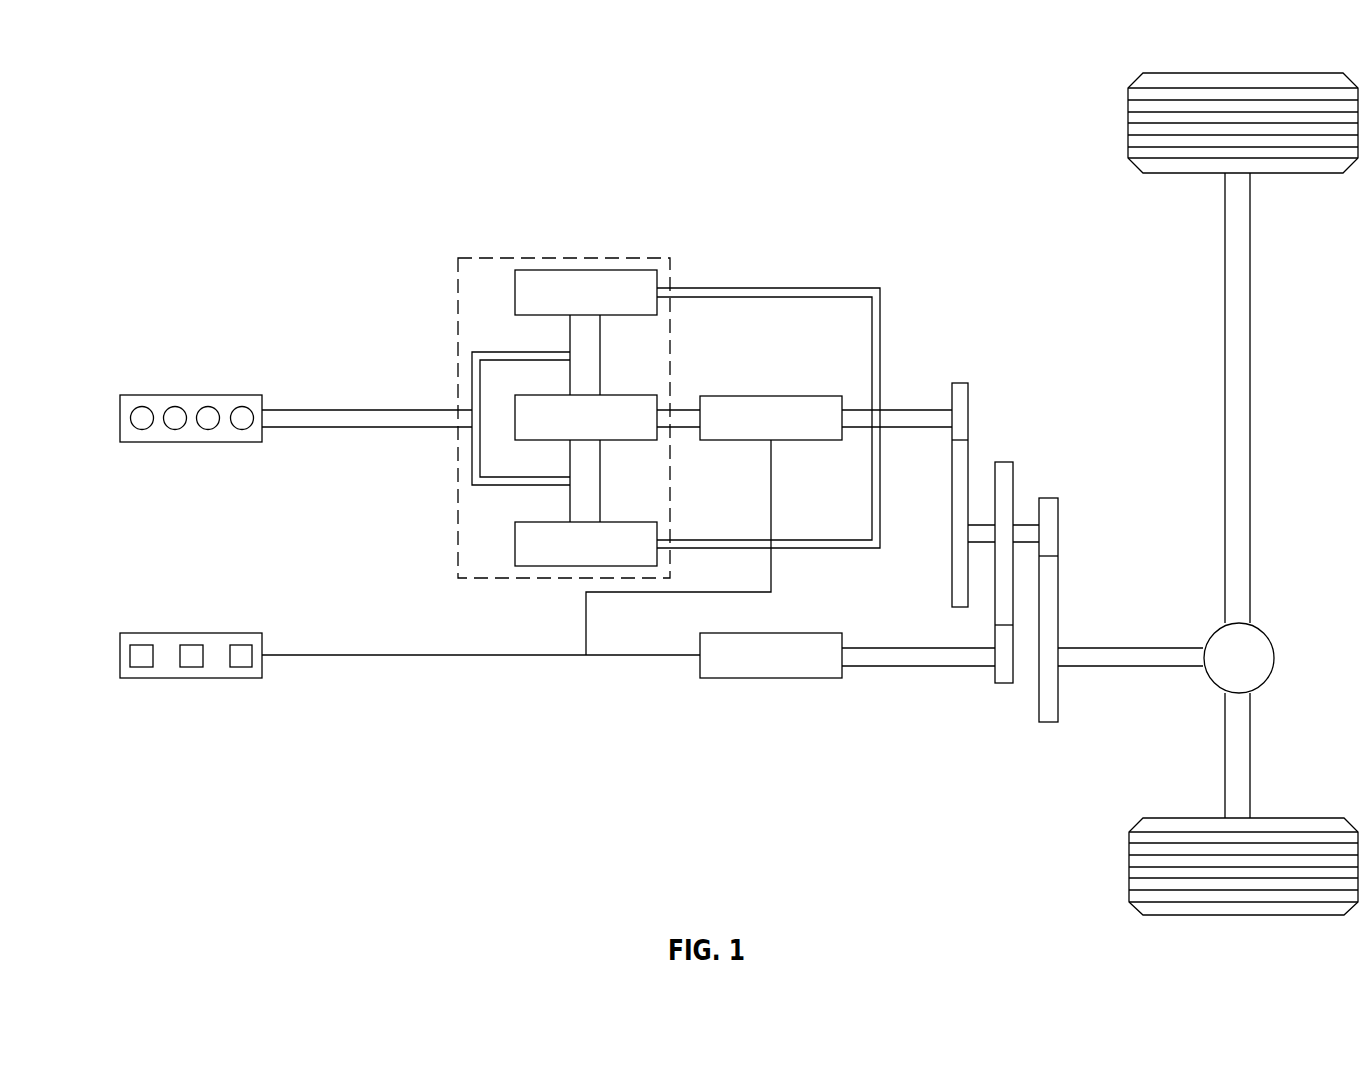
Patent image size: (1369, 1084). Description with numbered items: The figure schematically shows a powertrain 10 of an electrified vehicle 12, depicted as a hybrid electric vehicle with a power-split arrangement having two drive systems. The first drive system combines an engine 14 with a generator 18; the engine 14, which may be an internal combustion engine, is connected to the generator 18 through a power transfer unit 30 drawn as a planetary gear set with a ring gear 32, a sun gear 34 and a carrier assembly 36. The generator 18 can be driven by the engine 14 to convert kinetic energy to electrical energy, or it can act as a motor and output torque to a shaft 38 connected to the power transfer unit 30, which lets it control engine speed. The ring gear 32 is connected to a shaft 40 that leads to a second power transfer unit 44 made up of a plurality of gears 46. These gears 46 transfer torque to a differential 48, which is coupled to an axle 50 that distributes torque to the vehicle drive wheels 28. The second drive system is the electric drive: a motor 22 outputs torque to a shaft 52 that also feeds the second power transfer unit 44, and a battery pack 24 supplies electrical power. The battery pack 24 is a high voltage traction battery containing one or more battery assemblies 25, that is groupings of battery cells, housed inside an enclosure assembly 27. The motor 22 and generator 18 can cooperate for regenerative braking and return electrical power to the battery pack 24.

The powertrain 10 is at (160, 160).
The electrified vehicle 12 is at (795, 226).
The engine 14 is at (175, 443).
The generator 18 is at (790, 396).
The motor 22 is at (757, 633).
The battery pack 24 is at (118, 652).
The battery assemblies 25 is at (133, 650).
The enclosure assembly 27 is at (175, 678).
The vehicle drive wheels 28 is at (1305, 73).
The power transfer unit 30 is at (510, 258).
The ring gear 32 is at (588, 270).
The sun gear 34 is at (558, 441).
The carrier assembly 36 is at (468, 452).
The shaft 38 is at (688, 408).
The shaft 40 is at (895, 430).
The second power transfer unit 44 is at (1085, 375).
The gears 46 is at (960, 383).
The differential 48 is at (1275, 660).
The axle 50 is at (1240, 417).
The shaft 52 is at (862, 668).